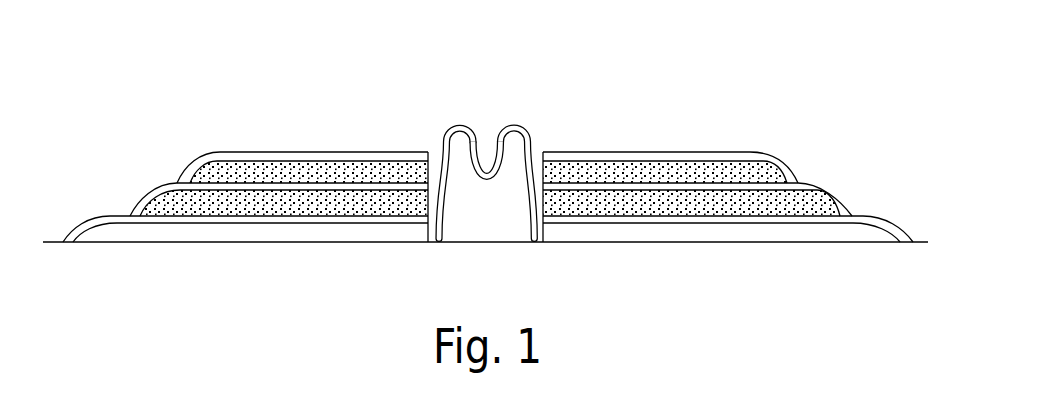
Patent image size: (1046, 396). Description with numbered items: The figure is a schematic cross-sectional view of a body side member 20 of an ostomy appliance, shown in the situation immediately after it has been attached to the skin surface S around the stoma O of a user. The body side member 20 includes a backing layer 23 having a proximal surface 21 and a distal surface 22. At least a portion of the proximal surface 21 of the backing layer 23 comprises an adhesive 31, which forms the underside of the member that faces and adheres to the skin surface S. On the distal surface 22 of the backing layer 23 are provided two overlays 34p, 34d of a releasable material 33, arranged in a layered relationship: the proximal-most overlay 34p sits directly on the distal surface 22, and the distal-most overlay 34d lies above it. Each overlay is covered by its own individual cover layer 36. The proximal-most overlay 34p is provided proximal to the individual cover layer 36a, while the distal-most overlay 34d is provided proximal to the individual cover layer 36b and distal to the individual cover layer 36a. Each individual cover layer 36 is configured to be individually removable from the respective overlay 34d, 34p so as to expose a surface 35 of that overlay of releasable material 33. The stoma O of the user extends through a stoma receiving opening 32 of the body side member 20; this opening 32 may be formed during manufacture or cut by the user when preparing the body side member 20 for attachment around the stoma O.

The body side member 20 is at (124, 81).
The skin surface S is at (922, 240).
The adhesive 31 is at (670, 228).
The proximal surface 21 is at (725, 223).
The backing layer 23 is at (797, 217).
The distal surface 22 is at (852, 213).
The proximal-most overlay 34p is at (160, 195).
The releasable material 33 is at (212, 170).
The distal-most overlay 34d is at (307, 170).
The surface 35 is at (588, 162).
The individual cover layers 36 is at (375, 160).
The individual cover layer 36b is at (673, 160).
The individual cover layer 36a is at (797, 185).
The stoma receiving opening 32 is at (433, 145).
The stoma O is at (515, 138).